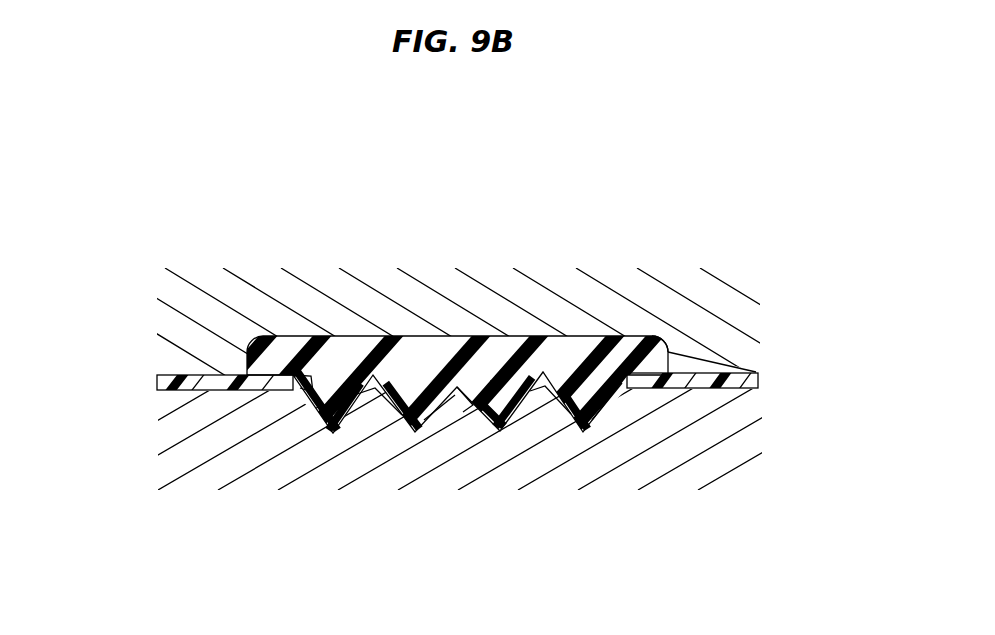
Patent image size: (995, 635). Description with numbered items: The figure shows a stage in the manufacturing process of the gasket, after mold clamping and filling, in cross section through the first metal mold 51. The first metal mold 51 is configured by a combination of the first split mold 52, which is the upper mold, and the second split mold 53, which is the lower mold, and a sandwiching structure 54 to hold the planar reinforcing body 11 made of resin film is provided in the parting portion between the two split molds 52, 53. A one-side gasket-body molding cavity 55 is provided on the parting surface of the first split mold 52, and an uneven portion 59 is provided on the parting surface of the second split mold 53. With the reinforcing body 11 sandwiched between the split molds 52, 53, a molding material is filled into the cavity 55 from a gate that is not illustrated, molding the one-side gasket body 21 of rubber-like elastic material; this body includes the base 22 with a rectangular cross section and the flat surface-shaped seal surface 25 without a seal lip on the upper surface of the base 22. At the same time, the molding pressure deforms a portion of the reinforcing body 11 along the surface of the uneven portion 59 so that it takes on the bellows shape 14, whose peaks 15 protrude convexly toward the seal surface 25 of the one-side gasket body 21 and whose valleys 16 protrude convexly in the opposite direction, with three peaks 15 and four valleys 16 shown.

The reinforcing body 11 is at (758, 381).
The bellows shape 14 is at (518, 337).
The peaks 15 is at (459, 376).
The valleys 16 is at (502, 413).
The one-side gasket body 21 is at (580, 347).
The base 22 is at (342, 356).
The flat surface-shaped seal surface 25 is at (384, 337).
The first metal mold 51 is at (169, 268).
The first split mold 52 is at (177, 333).
The second split mold 53 is at (180, 460).
The sandwiching structure 54 is at (168, 403).
The one-side gasket-body molding cavity 55 is at (660, 347).
The uneven portion 59 is at (597, 413).